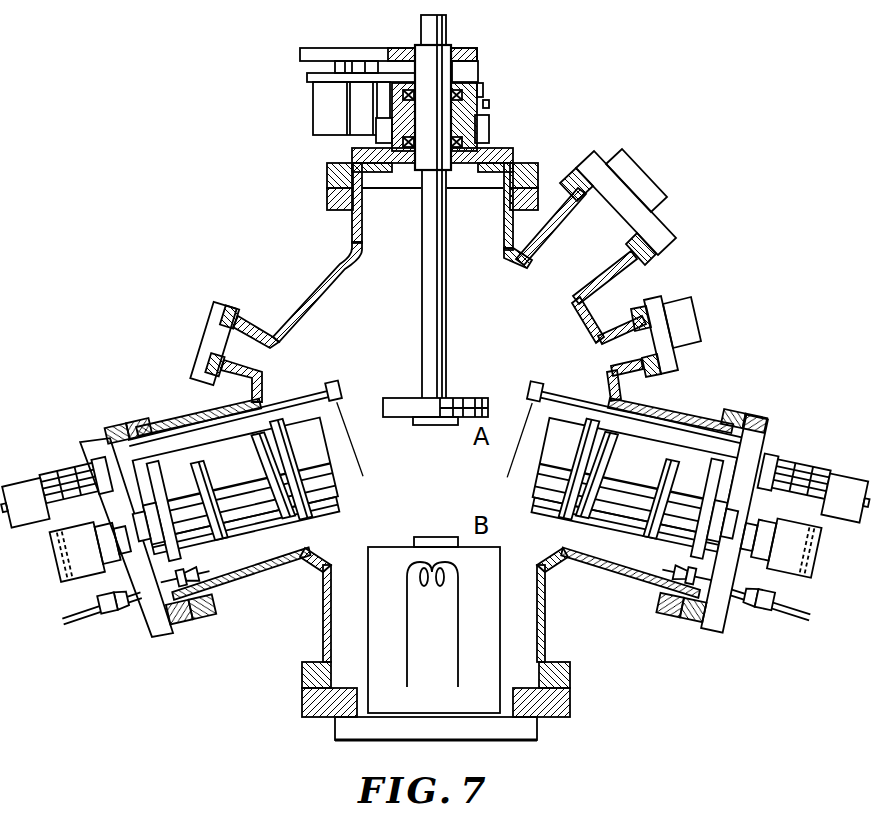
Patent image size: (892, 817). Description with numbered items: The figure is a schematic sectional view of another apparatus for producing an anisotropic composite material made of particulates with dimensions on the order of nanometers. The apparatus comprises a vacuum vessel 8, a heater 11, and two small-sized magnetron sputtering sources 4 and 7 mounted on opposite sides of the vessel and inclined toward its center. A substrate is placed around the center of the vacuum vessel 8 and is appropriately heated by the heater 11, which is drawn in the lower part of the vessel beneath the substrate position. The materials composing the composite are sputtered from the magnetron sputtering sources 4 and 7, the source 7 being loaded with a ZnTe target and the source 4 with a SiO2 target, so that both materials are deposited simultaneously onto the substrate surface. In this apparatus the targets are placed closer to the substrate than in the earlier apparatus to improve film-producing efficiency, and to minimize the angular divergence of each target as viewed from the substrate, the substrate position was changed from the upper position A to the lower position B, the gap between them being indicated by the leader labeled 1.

The discharge gap between electrodes 1 is at (424, 425).
The magnetron sputtering source 4 is at (643, 473).
The magnetron sputtering source 7 is at (257, 510).
The vacuum vessel 8 is at (585, 302).
The heater 11 is at (457, 628).